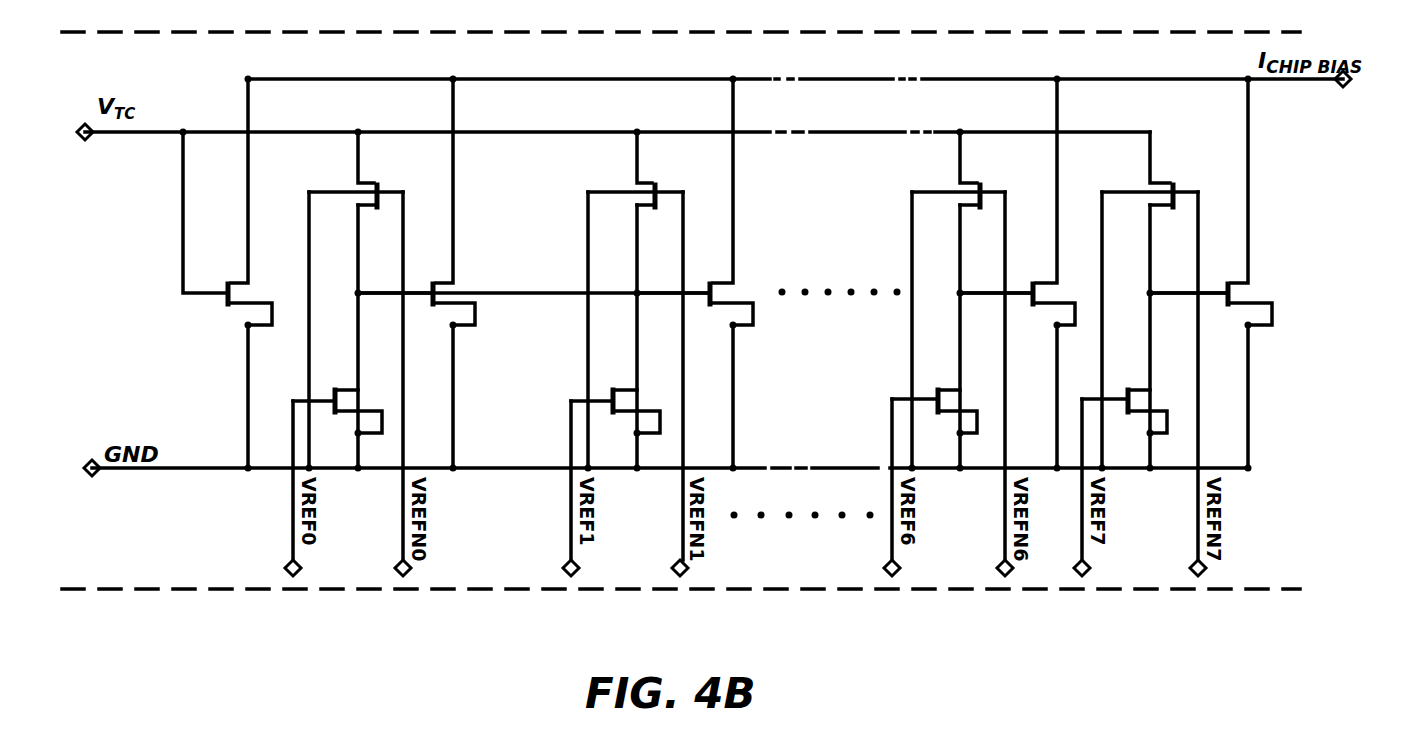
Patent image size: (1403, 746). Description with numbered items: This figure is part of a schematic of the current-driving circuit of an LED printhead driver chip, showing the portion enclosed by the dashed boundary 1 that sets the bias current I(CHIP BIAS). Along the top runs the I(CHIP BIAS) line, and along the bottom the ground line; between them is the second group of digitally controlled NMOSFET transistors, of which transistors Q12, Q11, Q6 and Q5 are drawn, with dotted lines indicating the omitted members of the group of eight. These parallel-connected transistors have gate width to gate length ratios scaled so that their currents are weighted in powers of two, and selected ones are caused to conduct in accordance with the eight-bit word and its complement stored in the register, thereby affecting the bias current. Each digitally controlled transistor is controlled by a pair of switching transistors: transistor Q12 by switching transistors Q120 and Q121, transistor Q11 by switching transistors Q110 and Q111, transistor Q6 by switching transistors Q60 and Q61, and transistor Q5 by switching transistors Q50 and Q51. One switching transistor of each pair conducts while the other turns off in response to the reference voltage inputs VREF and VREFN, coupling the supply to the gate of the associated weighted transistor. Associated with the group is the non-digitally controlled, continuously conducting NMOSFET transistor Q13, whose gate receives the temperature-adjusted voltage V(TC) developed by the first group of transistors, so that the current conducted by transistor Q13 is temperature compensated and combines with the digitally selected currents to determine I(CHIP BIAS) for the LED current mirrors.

The integrated circuit chip boundary 1 is at (681, 294).
The non-digitally controlled NMOSFET transistor Q13 is at (263, 273).
The digitally controlled NMOSFET transistor Q12 is at (430, 273).
The digitally controlled NMOSFET transistor Q11 is at (711, 273).
The digitally controlled NMOSFET transistor Q6 is at (1026, 273).
The digitally controlled NMOSFET transistor Q5 is at (1219, 273).
The switching transistor Q120 is at (365, 169).
The switching transistor Q121 is at (352, 399).
The switching transistor Q110 is at (643, 169).
The switching transistor Q111 is at (629, 399).
The switching transistor Q60 is at (967, 169).
The switching transistor Q61 is at (947, 399).
The switching transistor Q50 is at (1154, 169).
The switching transistor Q51 is at (1137, 399).